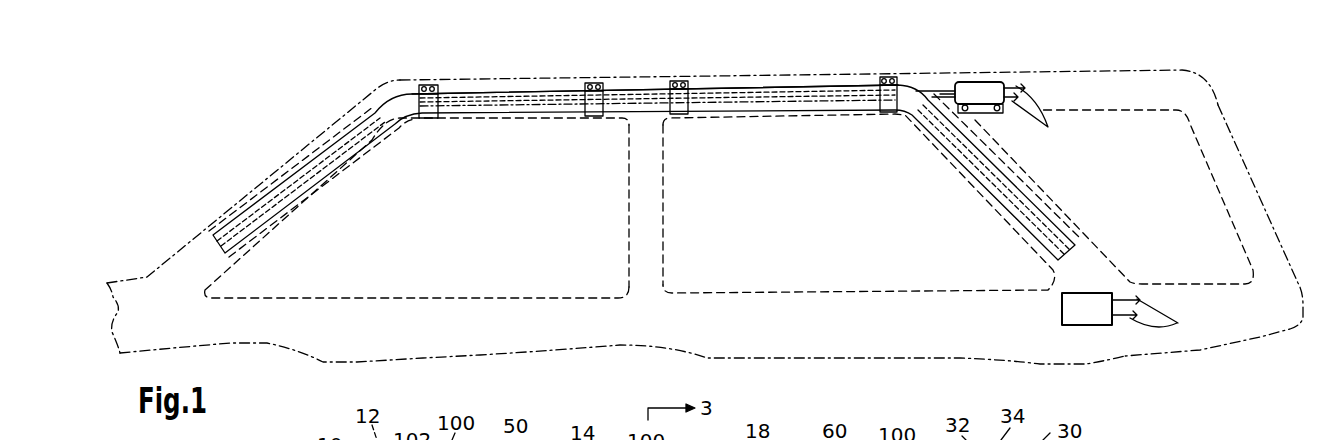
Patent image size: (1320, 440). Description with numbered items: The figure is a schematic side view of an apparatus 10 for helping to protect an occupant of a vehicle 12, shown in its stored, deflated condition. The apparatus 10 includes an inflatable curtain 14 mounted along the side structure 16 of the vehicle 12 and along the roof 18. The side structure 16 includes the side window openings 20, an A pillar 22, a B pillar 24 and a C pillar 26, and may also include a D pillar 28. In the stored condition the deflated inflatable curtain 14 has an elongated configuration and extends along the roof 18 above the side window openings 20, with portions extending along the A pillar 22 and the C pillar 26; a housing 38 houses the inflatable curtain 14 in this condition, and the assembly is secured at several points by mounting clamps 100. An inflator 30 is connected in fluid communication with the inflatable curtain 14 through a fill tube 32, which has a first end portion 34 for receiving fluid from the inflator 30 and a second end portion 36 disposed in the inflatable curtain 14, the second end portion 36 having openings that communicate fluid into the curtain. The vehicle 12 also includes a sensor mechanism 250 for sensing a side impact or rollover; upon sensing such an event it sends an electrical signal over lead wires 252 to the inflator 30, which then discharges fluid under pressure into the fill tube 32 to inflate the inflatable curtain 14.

The apparatus 10 is at (904, 53).
The vehicle 12 is at (250, 136).
The inflatable curtain 14 is at (318, 150).
The side structure 16 is at (728, 320).
The roof 18 is at (638, 77).
The side window openings 20 is at (445, 250).
The A pillar 22 is at (307, 193).
The B pillar 24 is at (652, 198).
The C pillar 26 is at (1043, 198).
The D pillar 28 is at (1223, 165).
The inflator 30 is at (977, 90).
The fill tube 32 is at (920, 92).
The first end portion 34 is at (933, 94).
The second end portion 36 is at (510, 97).
The housing 38 is at (460, 93).
The mounting clamp 100 is at (420, 87).
The sensor mechanism 250 is at (1073, 310).
The lead wires 252 is at (1178, 327).